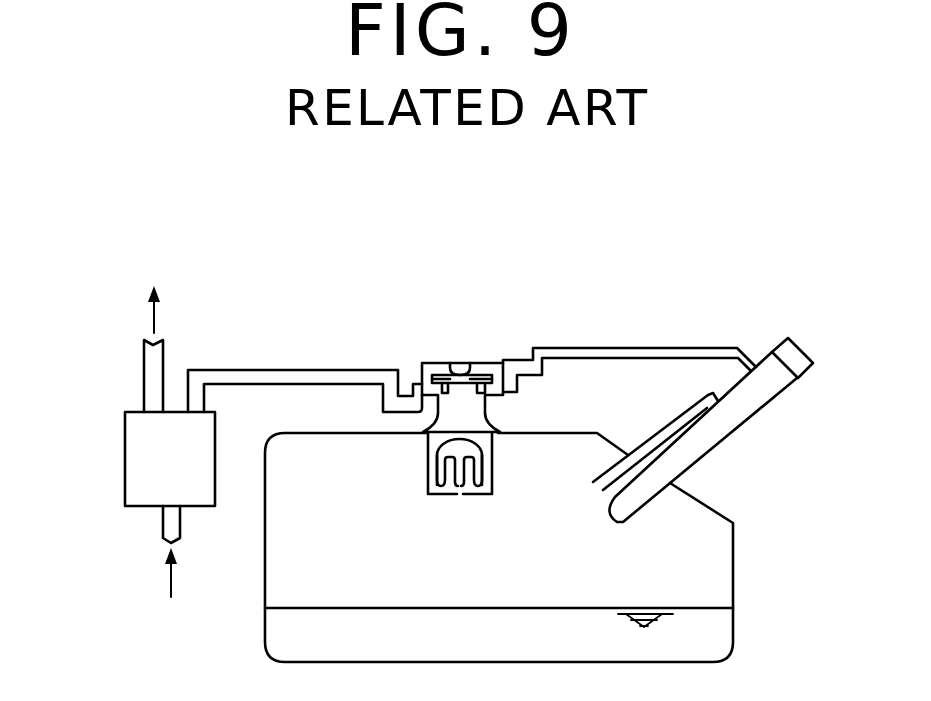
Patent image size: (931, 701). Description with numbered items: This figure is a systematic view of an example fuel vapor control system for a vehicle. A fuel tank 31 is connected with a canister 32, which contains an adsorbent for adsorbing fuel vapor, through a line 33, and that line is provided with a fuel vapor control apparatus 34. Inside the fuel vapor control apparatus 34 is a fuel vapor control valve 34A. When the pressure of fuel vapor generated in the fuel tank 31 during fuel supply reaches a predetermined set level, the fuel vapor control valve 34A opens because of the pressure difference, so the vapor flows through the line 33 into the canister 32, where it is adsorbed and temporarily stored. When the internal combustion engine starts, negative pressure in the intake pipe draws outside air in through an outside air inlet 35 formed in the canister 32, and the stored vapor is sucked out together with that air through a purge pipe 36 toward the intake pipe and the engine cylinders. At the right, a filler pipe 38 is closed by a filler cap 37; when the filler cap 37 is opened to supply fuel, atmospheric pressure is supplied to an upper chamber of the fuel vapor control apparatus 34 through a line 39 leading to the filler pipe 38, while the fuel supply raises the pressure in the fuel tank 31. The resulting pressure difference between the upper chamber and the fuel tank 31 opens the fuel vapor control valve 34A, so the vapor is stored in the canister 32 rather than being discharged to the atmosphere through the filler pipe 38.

The fuel tank 31 is at (722, 576).
The canister 32 is at (132, 476).
The line 33 is at (231, 371).
The fuel vapor control apparatus 34 is at (503, 410).
The fuel vapor control valve 34A is at (463, 366).
The outside air inlet 35 is at (160, 519).
The purge pipe 36 is at (144, 380).
The filler cap 37 is at (781, 346).
The filler pipe 38 is at (763, 397).
The line 39 is at (660, 348).